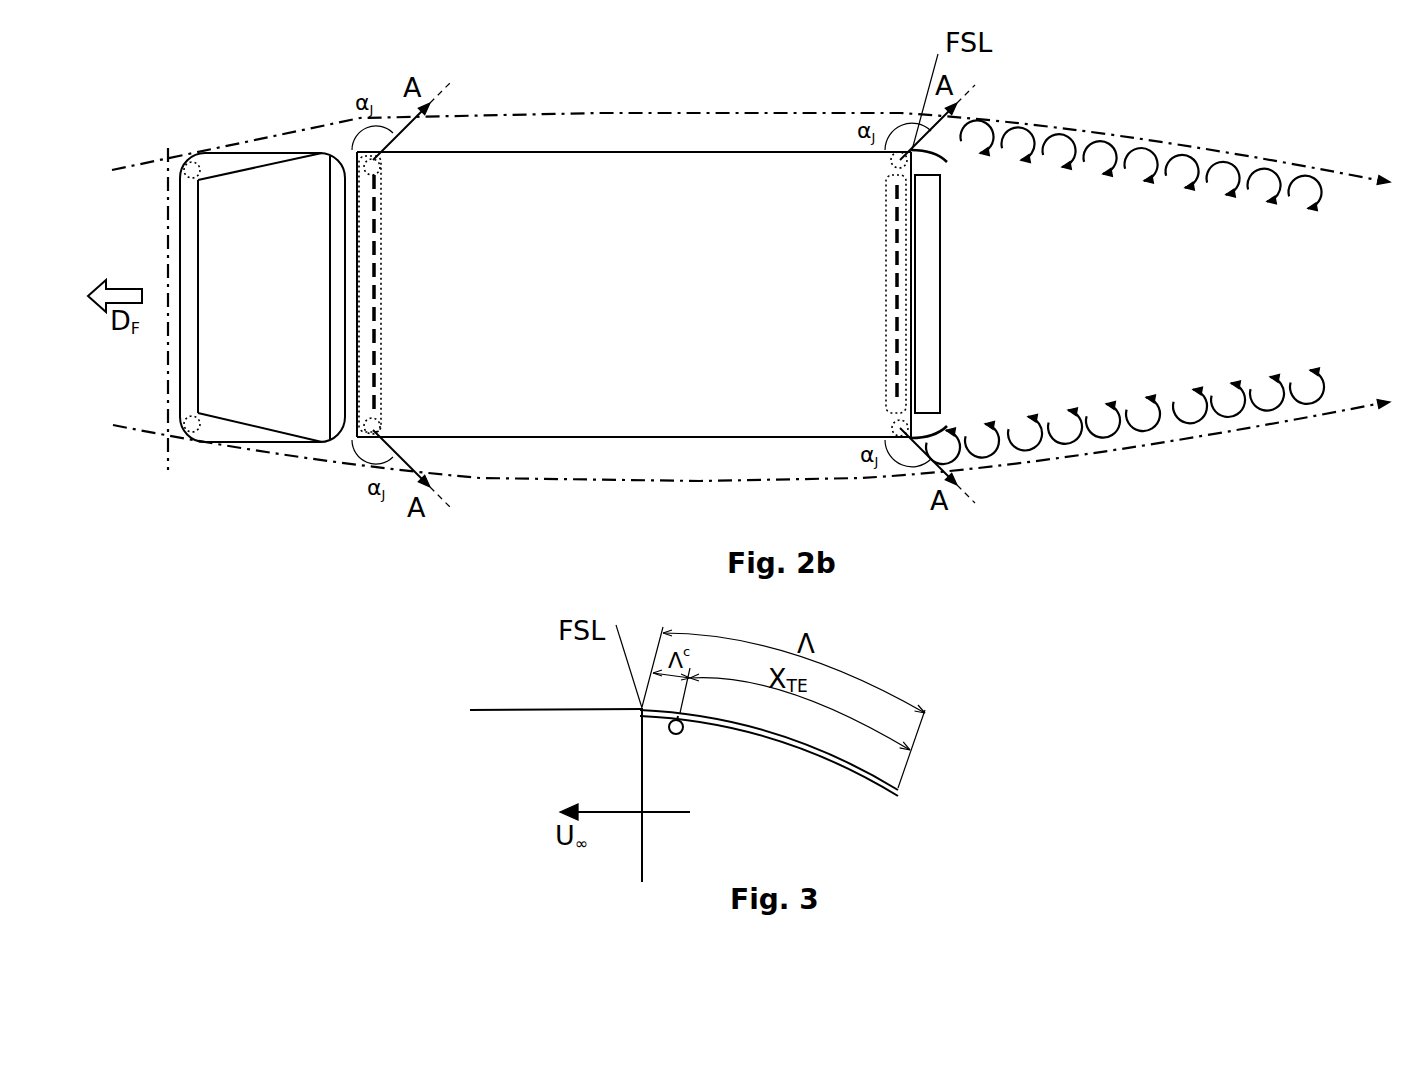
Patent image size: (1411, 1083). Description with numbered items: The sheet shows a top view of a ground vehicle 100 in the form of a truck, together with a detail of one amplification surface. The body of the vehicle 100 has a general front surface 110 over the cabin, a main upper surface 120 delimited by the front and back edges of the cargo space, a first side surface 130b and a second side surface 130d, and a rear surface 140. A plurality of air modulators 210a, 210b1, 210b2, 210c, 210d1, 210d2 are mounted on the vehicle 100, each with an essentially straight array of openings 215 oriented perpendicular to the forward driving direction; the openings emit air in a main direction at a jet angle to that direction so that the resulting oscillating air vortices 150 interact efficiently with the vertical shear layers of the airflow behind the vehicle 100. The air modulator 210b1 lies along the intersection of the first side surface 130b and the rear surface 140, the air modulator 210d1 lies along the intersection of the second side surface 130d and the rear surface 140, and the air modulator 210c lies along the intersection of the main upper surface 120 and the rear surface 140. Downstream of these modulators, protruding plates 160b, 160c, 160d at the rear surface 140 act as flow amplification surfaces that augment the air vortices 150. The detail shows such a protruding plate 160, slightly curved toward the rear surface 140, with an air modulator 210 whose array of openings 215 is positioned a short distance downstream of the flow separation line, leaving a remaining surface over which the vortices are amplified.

In FIG. 2b, the ground vehicle 100 is at (528, 82).
In FIG. 3, the ground vehicle 100 is at (530, 676).
In FIG. 2b, the general front surface 110 is at (170, 262).
In FIG. 2b, the main upper surface 120 is at (788, 297).
In FIG. 2b, the second side surface 130d is at (595, 150).
In FIG. 2b, the first side surface 130b is at (588, 438).
In FIG. 2b, the rear surface 140 is at (917, 370).
In FIG. 3, the rear surface 140 is at (643, 840).
In FIG. 2b, the air vortices 150 is at (1092, 175).
In FIG. 2b, the protruding plate 160d is at (947, 162).
In FIG. 2b, the protruding plate 160c is at (940, 302).
In FIG. 2b, the protruding plate 160b is at (950, 427).
In FIG. 3, the protruding plate 160 is at (903, 792).
In FIG. 2b, the air modulator 210 is at (197, 162).
In FIG. 3, the air modulator 210 is at (677, 734).
In FIG. 2b, the air modulator 210a is at (380, 268).
In FIG. 2b, the third air modulator 210b1 is at (903, 442).
In FIG. 2b, the air modulator 210b2 is at (380, 427).
In FIG. 2b, the second air modulator 210c is at (885, 237).
In FIG. 2b, the fourth air modulator 210d1 is at (908, 148).
In FIG. 2b, the air modulator 210d2 is at (378, 170).
In FIG. 2b, the array of openings 215 is at (375, 325).
In FIG. 3, the array of openings 215 is at (680, 711).